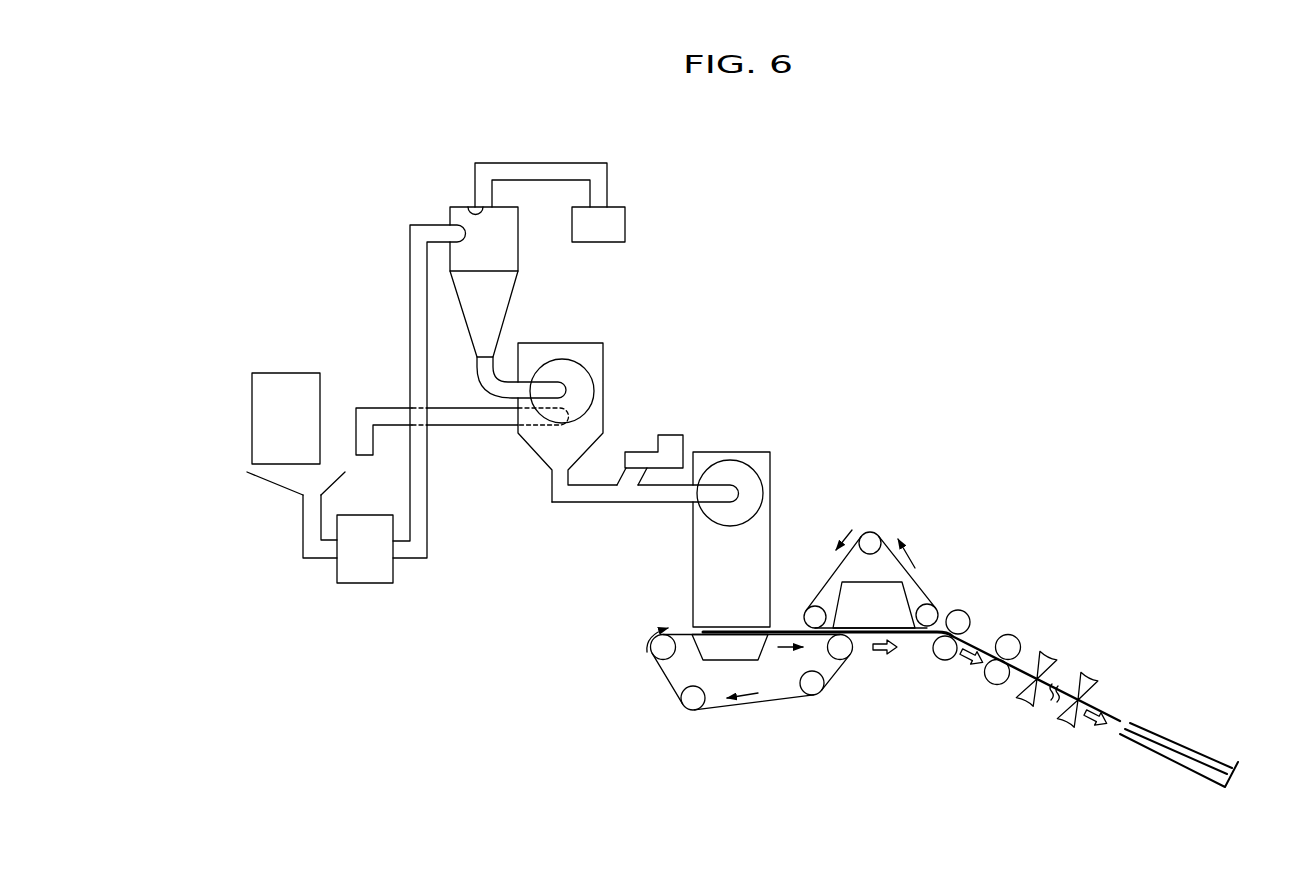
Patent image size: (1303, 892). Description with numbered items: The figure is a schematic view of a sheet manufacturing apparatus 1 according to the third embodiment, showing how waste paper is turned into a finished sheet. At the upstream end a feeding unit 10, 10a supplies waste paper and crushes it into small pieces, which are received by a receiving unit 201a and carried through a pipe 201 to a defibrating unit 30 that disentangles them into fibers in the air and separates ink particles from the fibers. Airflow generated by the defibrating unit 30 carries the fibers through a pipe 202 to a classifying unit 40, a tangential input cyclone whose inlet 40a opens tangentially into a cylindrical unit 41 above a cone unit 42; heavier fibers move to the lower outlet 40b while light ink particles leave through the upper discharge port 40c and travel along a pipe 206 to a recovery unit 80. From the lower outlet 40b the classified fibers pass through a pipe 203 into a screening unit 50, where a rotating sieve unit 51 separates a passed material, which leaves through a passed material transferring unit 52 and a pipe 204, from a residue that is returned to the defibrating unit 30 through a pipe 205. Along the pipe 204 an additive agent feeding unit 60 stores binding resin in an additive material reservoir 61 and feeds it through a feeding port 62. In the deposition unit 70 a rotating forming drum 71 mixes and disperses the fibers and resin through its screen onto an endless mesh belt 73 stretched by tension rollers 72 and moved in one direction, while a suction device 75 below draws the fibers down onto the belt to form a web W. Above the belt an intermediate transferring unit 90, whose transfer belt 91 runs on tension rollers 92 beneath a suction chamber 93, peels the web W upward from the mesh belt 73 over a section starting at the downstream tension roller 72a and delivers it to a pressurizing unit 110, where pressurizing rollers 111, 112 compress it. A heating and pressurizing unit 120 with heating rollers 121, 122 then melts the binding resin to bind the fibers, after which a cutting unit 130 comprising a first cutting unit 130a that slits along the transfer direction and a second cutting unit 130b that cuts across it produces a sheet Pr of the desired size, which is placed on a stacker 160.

The sheet manufacturing apparatus 1 is at (774, 190).
The feeding unit 10 is at (280, 376).
The raw material supply 10a is at (284, 361).
The defibrating unit 30 is at (370, 511).
The classifying unit 40 is at (528, 252).
The inlet 40a is at (457, 228).
The lower outlet 40b is at (497, 366).
The upper discharge port 40c is at (475, 213).
The cylindrical unit 41 is at (507, 237).
The cone unit 42 is at (477, 310).
The screening unit 50 is at (588, 394).
The sieve unit 51 is at (563, 370).
The passed material transferring unit 52 is at (545, 448).
The additive agent feeding unit 60 is at (649, 410).
The additive material reservoir 61 is at (670, 441).
The feeding port 62 is at (616, 482).
The deposition unit 70 is at (751, 572).
The forming drum 71 is at (733, 470).
The tension rollers 72 is at (663, 650).
The tension roller 72a is at (840, 660).
The mesh belt 73 is at (743, 705).
The suction device 75 is at (708, 655).
The recovery unit 80 is at (626, 198).
The intermediate transferring unit 90 is at (878, 529).
The transfer belt 91 is at (917, 580).
The tension rollers 92 is at (870, 540).
The suction chamber 93 is at (845, 586).
The pressurizing unit 110 is at (976, 612).
The pressurizing roller 111 is at (958, 621).
The pressurizing roller 112 is at (945, 661).
The heating and pressurizing unit 120 is at (1026, 633).
The heating roller 121 is at (1008, 641).
The heating roller 122 is at (997, 683).
The cutting unit 130 is at (1094, 641).
The first cutting unit 130a is at (1054, 642).
The second cutting unit 130b is at (1096, 661).
The stacker 160 is at (1147, 754).
The pipe 201 is at (310, 532).
The receiving unit 201a is at (282, 484).
The pipe 202 is at (415, 263).
The pipe 203 is at (500, 392).
The pipe 204 is at (582, 497).
The pipe 205 is at (447, 418).
The pipe 206 is at (548, 170).
The web W is at (786, 632).
The sheet Pr is at (1107, 709).